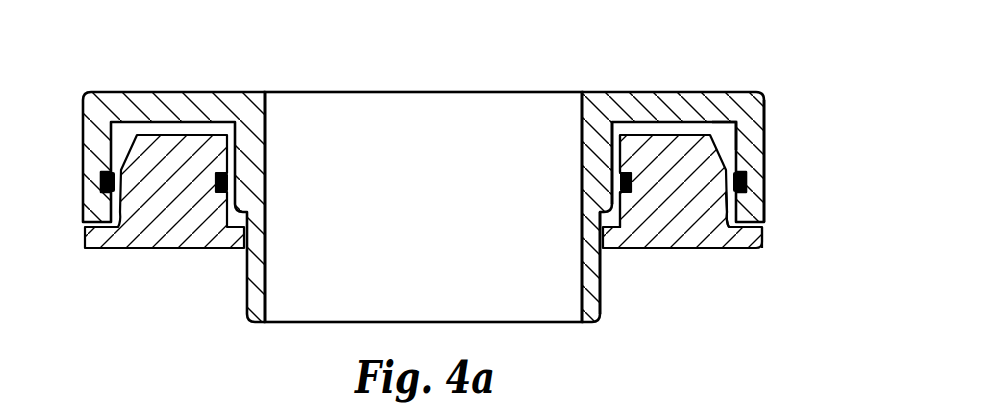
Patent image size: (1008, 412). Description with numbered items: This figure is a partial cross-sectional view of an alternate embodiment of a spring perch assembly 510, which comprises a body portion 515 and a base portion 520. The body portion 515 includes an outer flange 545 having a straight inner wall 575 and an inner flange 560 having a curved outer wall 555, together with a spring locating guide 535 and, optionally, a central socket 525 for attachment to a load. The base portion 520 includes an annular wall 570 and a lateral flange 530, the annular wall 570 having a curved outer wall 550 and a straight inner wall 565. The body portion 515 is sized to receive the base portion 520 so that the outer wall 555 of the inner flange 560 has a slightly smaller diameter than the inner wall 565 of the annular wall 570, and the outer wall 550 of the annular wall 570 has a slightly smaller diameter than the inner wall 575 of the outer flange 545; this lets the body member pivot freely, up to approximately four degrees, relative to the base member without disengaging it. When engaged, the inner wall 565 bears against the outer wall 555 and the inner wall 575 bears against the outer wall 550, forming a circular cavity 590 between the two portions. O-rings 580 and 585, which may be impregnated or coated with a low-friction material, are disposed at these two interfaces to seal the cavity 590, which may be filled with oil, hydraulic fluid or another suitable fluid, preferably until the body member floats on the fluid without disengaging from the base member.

The perch assembly 510 is at (790, 72).
The body portion 515 is at (719, 92).
The base portion 520 is at (665, 250).
The central socket 525 is at (348, 91).
The lateral flange 530 is at (766, 232).
The spring locating guide 535 is at (601, 294).
The outer flange 545 is at (766, 140).
The curved outer wall 550 is at (713, 200).
The curved outer wall 555 is at (609, 170).
The inner flange 560 is at (619, 170).
The straight inner wall 565 is at (626, 212).
The annular wall 570 is at (668, 132).
The straight inner wall 575 is at (737, 123).
The O-ring 580 is at (221, 194).
The O-ring 585 is at (103, 172).
The circular cavity 590 is at (171, 129).